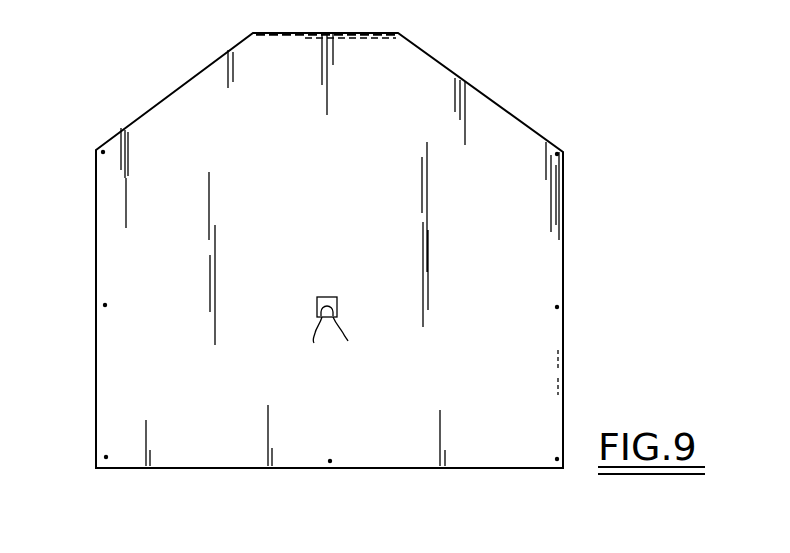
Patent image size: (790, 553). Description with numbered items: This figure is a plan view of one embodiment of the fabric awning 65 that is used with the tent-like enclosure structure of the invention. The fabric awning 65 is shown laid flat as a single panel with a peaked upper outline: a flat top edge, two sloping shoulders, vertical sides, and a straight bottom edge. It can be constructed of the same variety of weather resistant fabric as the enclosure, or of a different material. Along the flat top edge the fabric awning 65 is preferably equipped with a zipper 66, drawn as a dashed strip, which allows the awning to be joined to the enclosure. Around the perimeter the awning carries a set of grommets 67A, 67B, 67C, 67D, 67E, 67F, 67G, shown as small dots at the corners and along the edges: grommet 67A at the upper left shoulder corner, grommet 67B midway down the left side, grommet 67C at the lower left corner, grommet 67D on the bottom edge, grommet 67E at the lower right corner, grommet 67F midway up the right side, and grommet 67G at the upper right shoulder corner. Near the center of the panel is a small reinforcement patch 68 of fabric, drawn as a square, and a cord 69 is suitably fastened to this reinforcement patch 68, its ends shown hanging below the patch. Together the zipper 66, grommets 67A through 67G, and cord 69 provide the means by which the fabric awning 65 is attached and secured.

The fabric awning 65 is at (530, 256).
The zipper 66 is at (302, 38).
The grommet 67A is at (102, 152).
The grommet 67B is at (104, 305).
The grommet 67C is at (105, 457).
The grommet 67D is at (330, 463).
The grommet 67E is at (558, 463).
The grommet 67F is at (559, 308).
The grommet 67G is at (564, 153).
The reinforcement patch 68 is at (316, 304).
The cord 69 is at (349, 333).